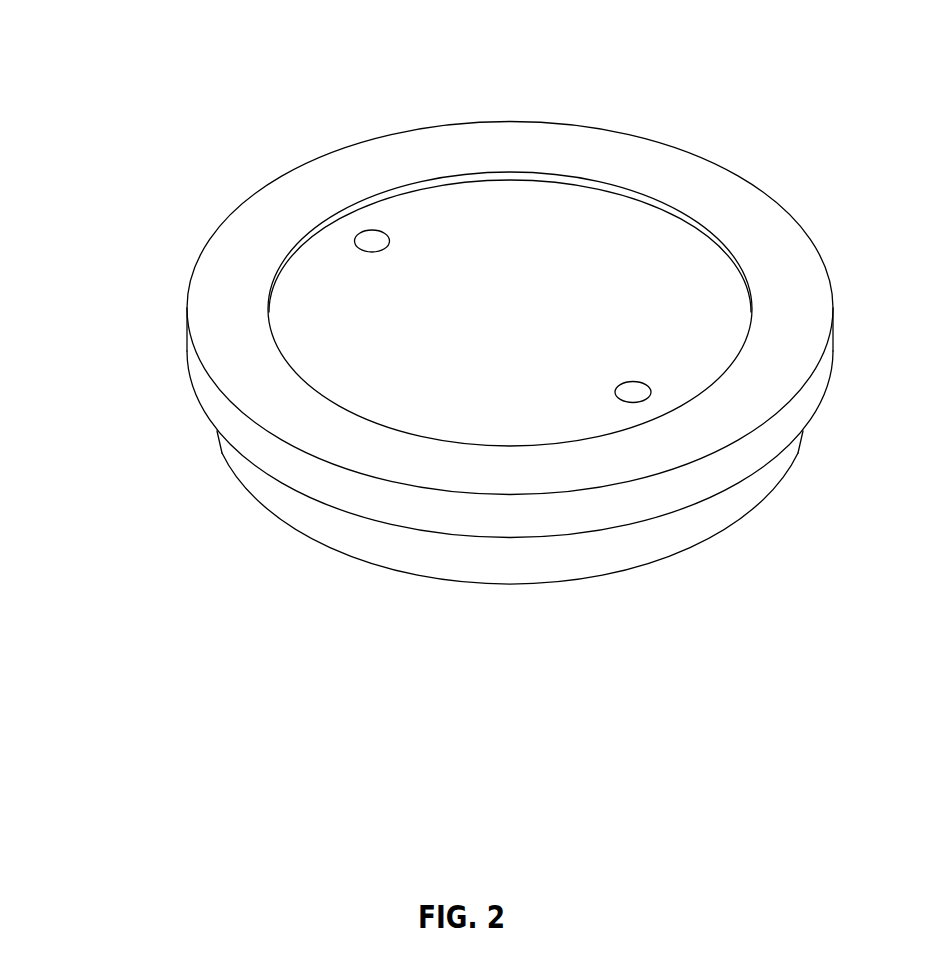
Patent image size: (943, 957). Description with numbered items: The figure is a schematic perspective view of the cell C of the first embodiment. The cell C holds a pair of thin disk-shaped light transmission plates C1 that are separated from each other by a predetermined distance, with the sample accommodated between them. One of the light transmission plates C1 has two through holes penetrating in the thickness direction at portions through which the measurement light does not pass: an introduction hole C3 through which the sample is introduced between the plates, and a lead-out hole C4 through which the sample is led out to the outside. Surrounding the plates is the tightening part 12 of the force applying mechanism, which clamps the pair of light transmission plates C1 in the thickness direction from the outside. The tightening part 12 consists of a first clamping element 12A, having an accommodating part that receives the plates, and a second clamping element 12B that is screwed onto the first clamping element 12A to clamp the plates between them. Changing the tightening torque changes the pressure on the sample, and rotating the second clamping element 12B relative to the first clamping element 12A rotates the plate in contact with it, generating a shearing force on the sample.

The cell C is at (406, 67).
The light transmission plate C1 is at (578, 230).
The introduction hole C3 is at (633, 381).
The lead-out hole C4 is at (367, 253).
The tightening part 12 is at (92, 350).
The first clamping element 12A is at (220, 452).
The second clamping element 12B is at (187, 347).